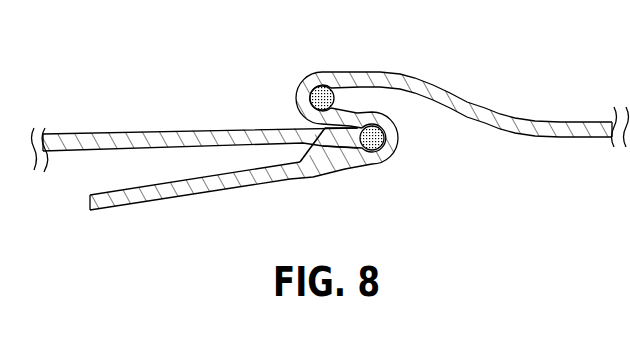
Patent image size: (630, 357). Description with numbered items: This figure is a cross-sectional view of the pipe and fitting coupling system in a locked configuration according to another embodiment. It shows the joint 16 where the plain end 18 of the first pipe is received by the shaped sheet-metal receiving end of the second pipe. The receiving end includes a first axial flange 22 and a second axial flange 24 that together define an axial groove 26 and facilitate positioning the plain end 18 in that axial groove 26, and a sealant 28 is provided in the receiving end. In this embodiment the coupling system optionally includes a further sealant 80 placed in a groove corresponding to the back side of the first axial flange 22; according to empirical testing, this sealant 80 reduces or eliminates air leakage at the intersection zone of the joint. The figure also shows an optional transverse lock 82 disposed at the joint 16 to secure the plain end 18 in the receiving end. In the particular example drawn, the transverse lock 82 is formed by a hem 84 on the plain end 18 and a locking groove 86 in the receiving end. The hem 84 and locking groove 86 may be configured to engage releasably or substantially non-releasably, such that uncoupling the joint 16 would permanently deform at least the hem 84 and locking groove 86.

The joint 16 is at (357, 51).
The plain end 18 is at (172, 132).
The first axial flange 22 is at (295, 100).
The second axial flange 24 is at (157, 201).
The axial groove 26 is at (400, 140).
The sealant 28 is at (387, 160).
The sealant 80 is at (313, 77).
The transverse lock 82 is at (322, 186).
The hem 84 is at (343, 165).
The locking groove 86 is at (317, 165).